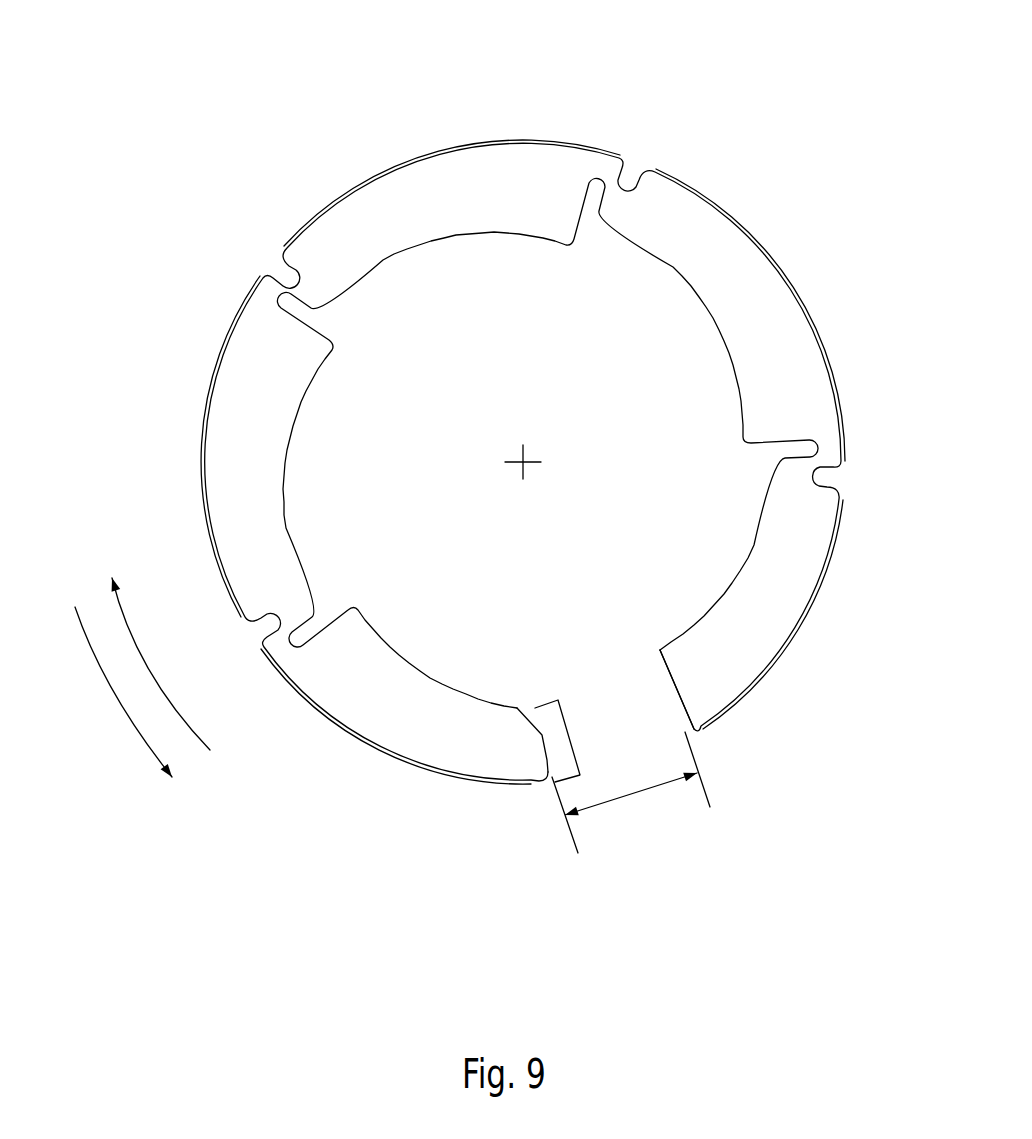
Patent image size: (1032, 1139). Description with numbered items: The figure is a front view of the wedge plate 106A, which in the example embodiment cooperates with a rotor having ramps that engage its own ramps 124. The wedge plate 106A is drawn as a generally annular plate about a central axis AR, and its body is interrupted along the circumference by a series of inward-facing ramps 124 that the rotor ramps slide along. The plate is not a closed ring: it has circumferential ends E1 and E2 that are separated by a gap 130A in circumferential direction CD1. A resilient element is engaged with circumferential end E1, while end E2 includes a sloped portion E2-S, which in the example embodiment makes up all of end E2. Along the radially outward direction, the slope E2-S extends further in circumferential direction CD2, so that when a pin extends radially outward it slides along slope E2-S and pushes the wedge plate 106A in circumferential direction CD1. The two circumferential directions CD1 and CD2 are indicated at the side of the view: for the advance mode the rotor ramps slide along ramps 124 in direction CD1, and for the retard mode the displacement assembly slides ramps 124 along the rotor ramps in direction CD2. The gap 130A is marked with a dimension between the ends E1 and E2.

The wedge plate 106A is at (527, 406).
The ramps 124 is at (510, 233).
The axis of rotation AR is at (523, 462).
The circumferential end E1 is at (672, 690).
The circumferential end E2 is at (512, 708).
The sloped portion E2-S is at (572, 740).
The gap 130A is at (643, 787).
The circumferential direction CD1 is at (130, 635).
The circumferential direction CD2 is at (128, 718).